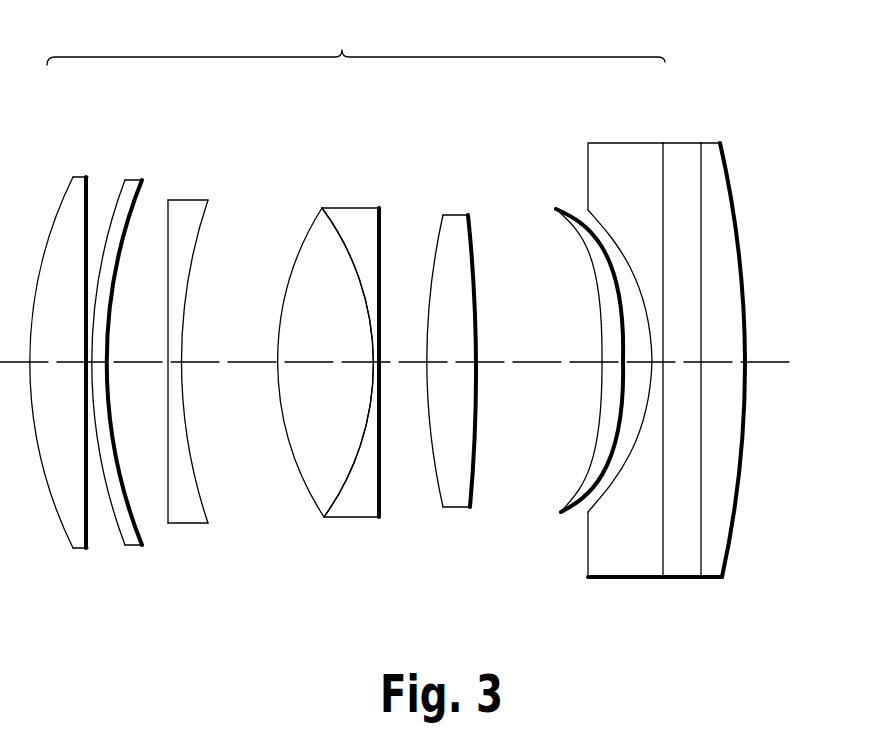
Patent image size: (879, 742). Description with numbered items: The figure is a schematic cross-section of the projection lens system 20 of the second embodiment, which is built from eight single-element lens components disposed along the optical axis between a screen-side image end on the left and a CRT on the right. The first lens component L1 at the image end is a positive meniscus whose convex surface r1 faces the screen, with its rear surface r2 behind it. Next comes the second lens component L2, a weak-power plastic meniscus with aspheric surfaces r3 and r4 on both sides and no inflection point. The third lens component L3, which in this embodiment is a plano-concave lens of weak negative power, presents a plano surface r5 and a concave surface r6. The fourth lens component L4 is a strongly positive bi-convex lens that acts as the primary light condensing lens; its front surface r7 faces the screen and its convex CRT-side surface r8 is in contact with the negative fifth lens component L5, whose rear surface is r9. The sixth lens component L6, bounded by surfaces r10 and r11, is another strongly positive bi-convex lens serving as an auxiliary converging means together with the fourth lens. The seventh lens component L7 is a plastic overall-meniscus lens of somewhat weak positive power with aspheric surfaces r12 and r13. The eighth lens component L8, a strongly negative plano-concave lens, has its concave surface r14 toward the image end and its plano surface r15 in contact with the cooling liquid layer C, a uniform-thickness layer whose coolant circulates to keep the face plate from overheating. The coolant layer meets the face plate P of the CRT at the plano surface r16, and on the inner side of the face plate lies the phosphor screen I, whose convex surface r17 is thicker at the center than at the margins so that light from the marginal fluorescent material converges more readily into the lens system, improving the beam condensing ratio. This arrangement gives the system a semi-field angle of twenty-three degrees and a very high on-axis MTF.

The projection lens system 20 is at (356, 40).
The first lens component L1 is at (65, 353).
The second lens component L2 is at (123, 355).
The third lens component L3 is at (207, 360).
The fourth lens component L4 is at (322, 356).
The fifth lens component L5 is at (362, 358).
The sixth lens component L6 is at (476, 355).
The seventh lens component L7 is at (558, 360).
The eighth lens component L8 is at (625, 358).
The cooling liquid layer C is at (691, 360).
The face plate P is at (748, 330).
The phosphor screen I is at (732, 177).
The first lens surface r1 is at (62, 527).
The second lens surface r2 is at (92, 547).
The third lens surface r3 is at (132, 540).
The fourth lens surface r4 is at (127, 470).
The fifth lens surface r5 is at (167, 523).
The sixth lens surface r6 is at (210, 502).
The seventh lens surface r7 is at (295, 463).
The eighth lens surface r8 is at (338, 507).
The ninth lens surface r9 is at (387, 510).
The tenth lens surface r10 is at (440, 493).
The eleventh lens surface r11 is at (472, 493).
The twelfth lens surface r12 is at (580, 487).
The thirteenth lens surface r13 is at (568, 522).
The fourteenth lens surface r14 is at (590, 578).
The fifteenth surface r15 is at (663, 557).
The sixteenth surface r16 is at (702, 567).
The seventeenth surface r17 is at (733, 540).